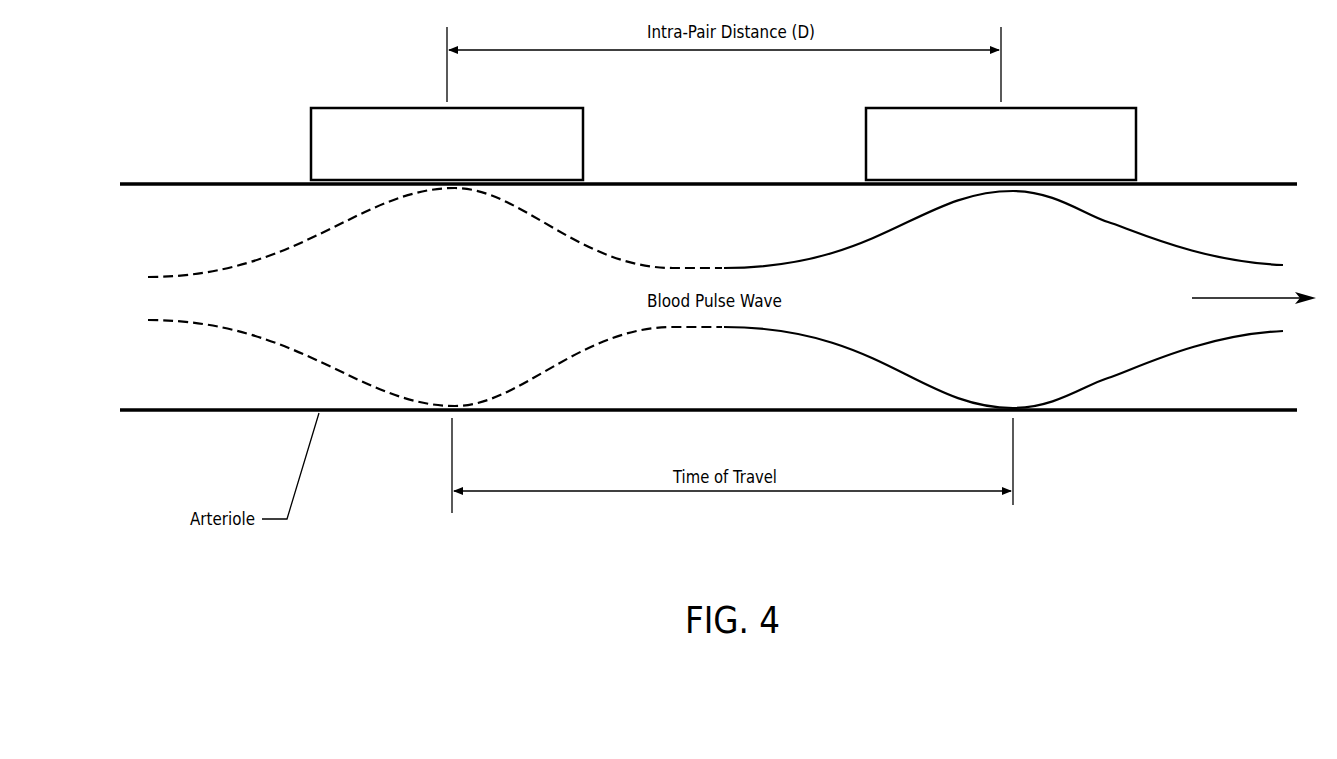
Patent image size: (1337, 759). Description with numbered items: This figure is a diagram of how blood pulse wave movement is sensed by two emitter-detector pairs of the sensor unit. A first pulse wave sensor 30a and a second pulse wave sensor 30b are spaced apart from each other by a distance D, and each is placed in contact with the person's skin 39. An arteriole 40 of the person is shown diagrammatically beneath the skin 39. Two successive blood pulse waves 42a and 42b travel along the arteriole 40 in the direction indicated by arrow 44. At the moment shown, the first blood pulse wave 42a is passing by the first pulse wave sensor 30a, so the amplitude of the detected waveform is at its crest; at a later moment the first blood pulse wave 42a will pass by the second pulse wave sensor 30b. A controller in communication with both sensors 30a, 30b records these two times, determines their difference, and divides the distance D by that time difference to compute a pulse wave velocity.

The first pulse wave sensor 30a is at (373, 107).
The second pulse wave sensor 30b is at (1078, 107).
The skin 39 is at (1243, 181).
The arteriole 40 is at (1202, 413).
The first blood pulse wave 42a is at (553, 222).
The second blood pulse wave 42b is at (1111, 217).
The arrow 44 is at (1248, 299).